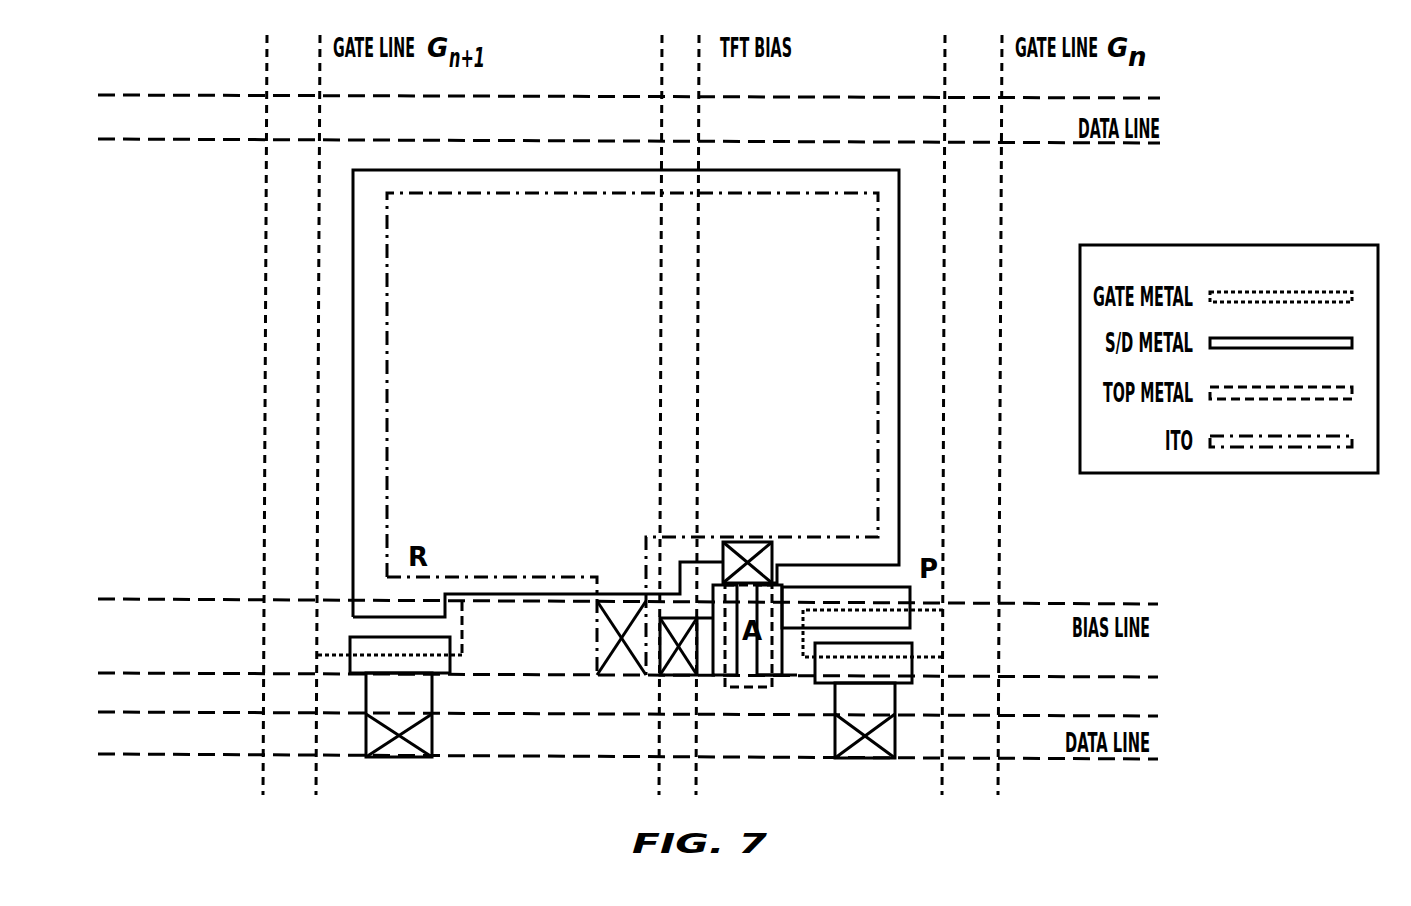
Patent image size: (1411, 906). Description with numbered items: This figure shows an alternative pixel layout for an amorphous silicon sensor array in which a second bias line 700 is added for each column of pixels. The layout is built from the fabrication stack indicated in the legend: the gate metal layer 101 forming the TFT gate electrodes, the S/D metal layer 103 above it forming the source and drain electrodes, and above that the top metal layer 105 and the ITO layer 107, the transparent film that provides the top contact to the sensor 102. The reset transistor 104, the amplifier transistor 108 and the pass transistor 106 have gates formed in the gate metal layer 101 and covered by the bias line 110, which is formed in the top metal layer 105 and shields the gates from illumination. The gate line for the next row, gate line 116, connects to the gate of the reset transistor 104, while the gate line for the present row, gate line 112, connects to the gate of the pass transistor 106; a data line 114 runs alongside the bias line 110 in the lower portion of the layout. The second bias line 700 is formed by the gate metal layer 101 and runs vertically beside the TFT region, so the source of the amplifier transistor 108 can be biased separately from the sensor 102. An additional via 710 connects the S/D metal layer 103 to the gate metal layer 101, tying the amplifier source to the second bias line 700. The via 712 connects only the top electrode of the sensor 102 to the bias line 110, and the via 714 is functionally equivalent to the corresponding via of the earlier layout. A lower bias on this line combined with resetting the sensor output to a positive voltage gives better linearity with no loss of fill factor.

The gate metal layer 101 is at (1305, 293).
The sensor 102 is at (800, 293).
The S/D metal layer 103 is at (1305, 340).
The reset transistor 104 is at (437, 628).
The top metal layer 105 is at (1305, 390).
The pass transistor 106 is at (903, 640).
The ITO layer 107 is at (1305, 438).
The amplifier transistor 108 is at (750, 690).
The bias line 110 is at (1107, 610).
The gate line Gn 112 is at (988, 88).
The data line 114 is at (1105, 727).
The gate line Gn+1 116 is at (300, 79).
The second bias line 700 is at (688, 78).
The via 710 is at (686, 677).
The via 712 is at (595, 655).
The via 714 is at (405, 758).